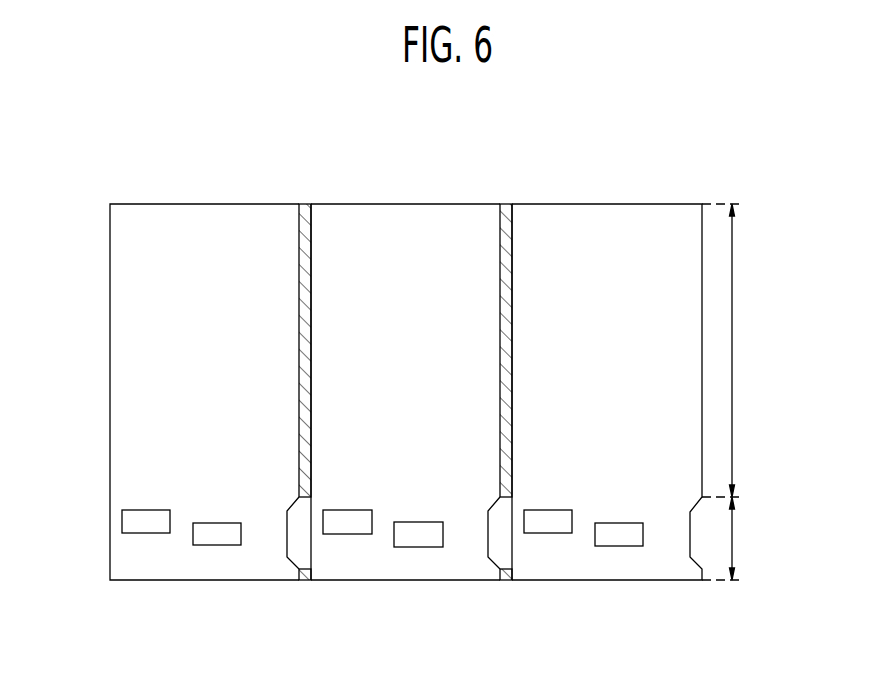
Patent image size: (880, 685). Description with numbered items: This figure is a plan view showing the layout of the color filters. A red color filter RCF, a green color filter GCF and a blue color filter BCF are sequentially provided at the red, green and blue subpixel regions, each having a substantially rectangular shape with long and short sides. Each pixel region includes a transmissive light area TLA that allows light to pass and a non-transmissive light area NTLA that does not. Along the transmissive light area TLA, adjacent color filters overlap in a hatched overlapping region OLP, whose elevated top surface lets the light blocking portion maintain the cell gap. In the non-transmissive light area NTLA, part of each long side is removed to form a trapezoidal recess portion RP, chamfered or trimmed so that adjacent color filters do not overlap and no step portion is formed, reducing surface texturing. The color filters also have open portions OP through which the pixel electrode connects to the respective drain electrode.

The red color filter RCF is at (207, 213).
The overlapping region OLP is at (306, 205).
The green color filter GCF is at (407, 213).
The blue color filter BCF is at (606, 213).
The open portion OP is at (122, 518).
The recess portion RP is at (294, 539).
The transmissive light area TLA is at (737, 350).
The non-transmissive light area NTLA is at (745, 538).